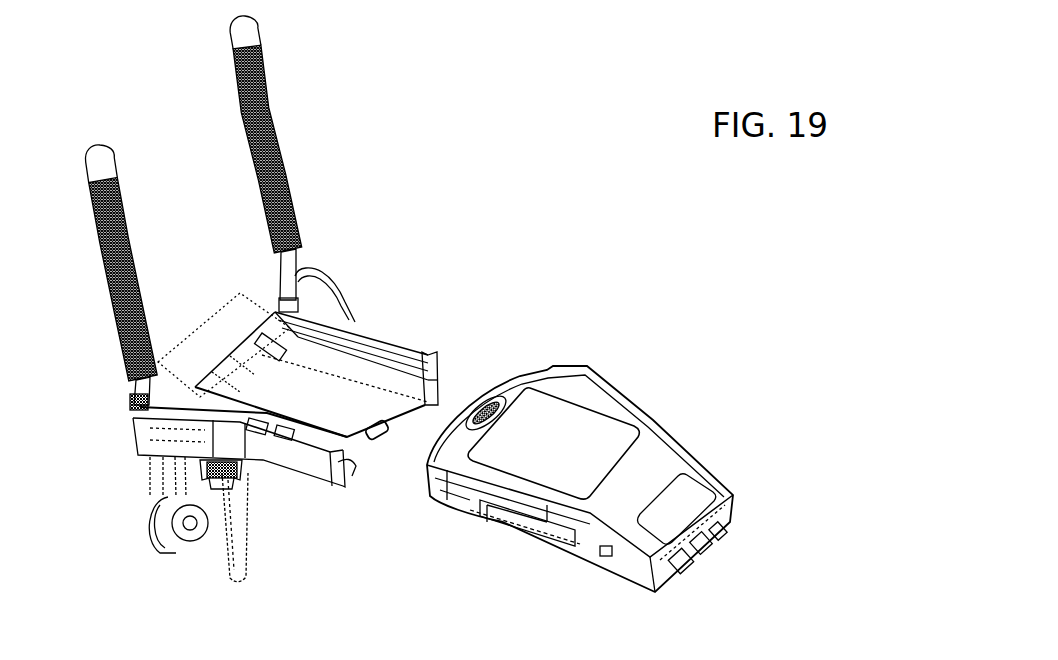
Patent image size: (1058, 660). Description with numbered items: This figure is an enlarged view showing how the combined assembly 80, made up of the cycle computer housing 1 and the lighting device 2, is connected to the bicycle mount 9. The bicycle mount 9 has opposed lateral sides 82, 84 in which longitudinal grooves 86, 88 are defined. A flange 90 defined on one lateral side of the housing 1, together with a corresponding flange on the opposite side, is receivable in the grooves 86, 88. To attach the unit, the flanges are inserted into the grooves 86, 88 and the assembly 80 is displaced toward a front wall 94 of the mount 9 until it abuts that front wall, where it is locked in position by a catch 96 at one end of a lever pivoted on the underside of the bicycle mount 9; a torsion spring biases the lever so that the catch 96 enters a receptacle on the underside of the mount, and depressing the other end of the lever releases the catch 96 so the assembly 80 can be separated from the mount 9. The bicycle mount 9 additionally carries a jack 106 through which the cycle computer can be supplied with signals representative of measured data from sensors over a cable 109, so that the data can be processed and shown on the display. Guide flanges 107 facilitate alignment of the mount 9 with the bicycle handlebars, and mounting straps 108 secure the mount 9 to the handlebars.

The cycle computer housing 1 is at (657, 437).
The lighting device 2 is at (724, 483).
The bicycle mount 9 is at (334, 306).
The combined assembly 80 is at (643, 406).
The lateral side 82 is at (307, 467).
The lateral side 84 is at (420, 348).
The longitudinal groove 86 is at (340, 470).
The longitudinal groove 88 is at (433, 383).
The flange 90 is at (540, 553).
The front wall 94 is at (242, 373).
The catch 96 is at (379, 436).
The jack 106 is at (235, 475).
The guide flanges 107 is at (188, 352).
The mounting straps 108 is at (117, 227).
The cable 109 is at (240, 537).